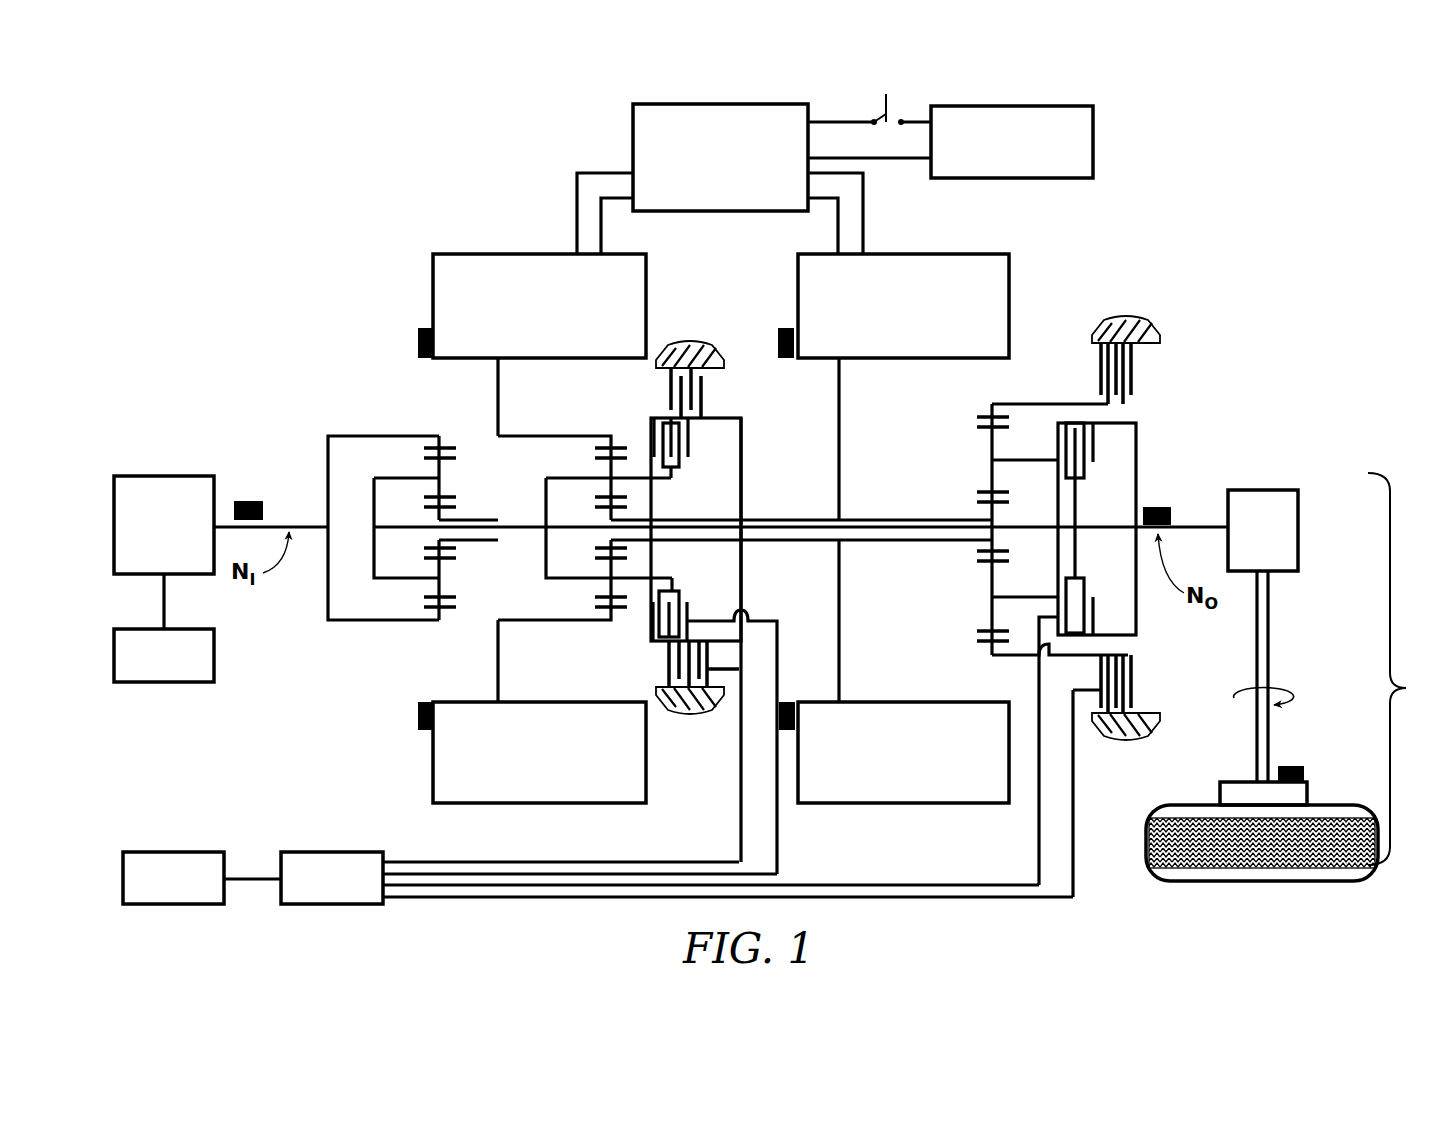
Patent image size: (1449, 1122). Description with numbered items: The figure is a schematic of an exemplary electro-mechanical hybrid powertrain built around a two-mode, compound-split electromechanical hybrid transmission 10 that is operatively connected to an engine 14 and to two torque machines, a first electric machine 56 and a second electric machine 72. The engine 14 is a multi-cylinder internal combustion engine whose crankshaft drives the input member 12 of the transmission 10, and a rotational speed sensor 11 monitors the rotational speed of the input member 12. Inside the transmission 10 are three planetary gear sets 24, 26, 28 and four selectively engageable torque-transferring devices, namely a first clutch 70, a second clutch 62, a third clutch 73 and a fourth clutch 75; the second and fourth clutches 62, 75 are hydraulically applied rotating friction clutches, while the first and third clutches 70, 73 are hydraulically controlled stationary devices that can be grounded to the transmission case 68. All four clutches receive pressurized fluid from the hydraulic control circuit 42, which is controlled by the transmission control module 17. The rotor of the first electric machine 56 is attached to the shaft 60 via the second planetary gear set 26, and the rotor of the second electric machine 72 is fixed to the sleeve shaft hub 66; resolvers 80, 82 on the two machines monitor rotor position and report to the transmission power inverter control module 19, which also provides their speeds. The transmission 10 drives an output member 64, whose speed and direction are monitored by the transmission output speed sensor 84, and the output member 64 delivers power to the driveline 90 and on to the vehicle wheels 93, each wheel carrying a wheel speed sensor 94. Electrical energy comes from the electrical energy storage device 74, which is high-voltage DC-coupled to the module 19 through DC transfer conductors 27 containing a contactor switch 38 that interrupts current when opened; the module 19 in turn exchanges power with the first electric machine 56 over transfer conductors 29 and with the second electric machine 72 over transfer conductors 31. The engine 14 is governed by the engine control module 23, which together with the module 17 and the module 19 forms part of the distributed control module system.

The electromechanical hybrid transmission 10 is at (383, 201).
The rotational speed sensor 11 is at (243, 492).
The input member 12 is at (291, 515).
The engine 14 is at (160, 468).
The transmission control module 17 is at (156, 844).
The transmission power inverter control module 19 is at (625, 114).
The engine control module 23 is at (201, 664).
The first planetary gear set 24 is at (421, 424).
The second planetary gear set 26 is at (595, 424).
The DC transfer conductors 27 is at (813, 114).
The third planetary gear set 28 is at (978, 400).
The transfer conductors 29 is at (569, 206).
The transfer conductors 31 is at (855, 199).
The contactor switch 38 is at (881, 91).
The hydraulic control circuit 42 is at (288, 844).
The first electric machine 56 is at (425, 281).
The shaft 60 is at (1041, 517).
The clutch C2 62 is at (1085, 458).
The output member 64 is at (1183, 517).
The sleeve shaft hub 66 is at (871, 509).
The transmission case 68 is at (683, 332).
The clutch C1 70 is at (1083, 353).
The second electric machine 72 is at (1001, 269).
The clutch C3 73 is at (707, 386).
The electrical energy storage device 74 is at (1085, 119).
The clutch C4 75 is at (687, 442).
The resolver 80 is at (410, 333).
The resolver 82 is at (778, 320).
The transmission output speed sensor 84 is at (1152, 498).
The driveline 90 is at (1293, 677).
The vehicle wheel 93 is at (1212, 780).
The wheel speed sensor 94 is at (1283, 758).